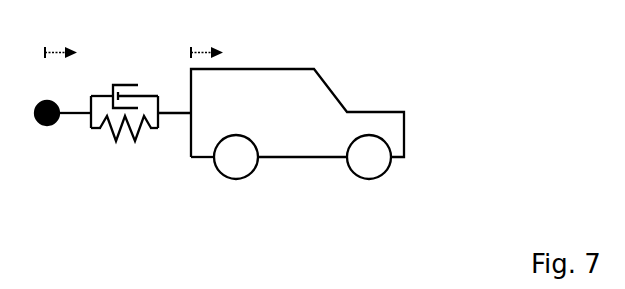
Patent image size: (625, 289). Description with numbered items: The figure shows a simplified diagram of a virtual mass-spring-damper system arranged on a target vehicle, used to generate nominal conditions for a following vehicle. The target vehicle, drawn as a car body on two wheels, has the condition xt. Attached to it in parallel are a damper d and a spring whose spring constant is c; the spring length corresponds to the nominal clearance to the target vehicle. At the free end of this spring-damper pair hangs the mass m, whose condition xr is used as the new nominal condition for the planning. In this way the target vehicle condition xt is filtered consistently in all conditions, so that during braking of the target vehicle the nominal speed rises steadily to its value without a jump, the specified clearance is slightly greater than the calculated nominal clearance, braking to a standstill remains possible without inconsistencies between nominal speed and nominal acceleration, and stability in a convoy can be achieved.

The mass m is at (63, 100).
The damper d is at (124, 86).
The spring constant c is at (125, 141).
The condition of the mass xr is at (58, 41).
The target vehicle condition xt is at (204, 42).